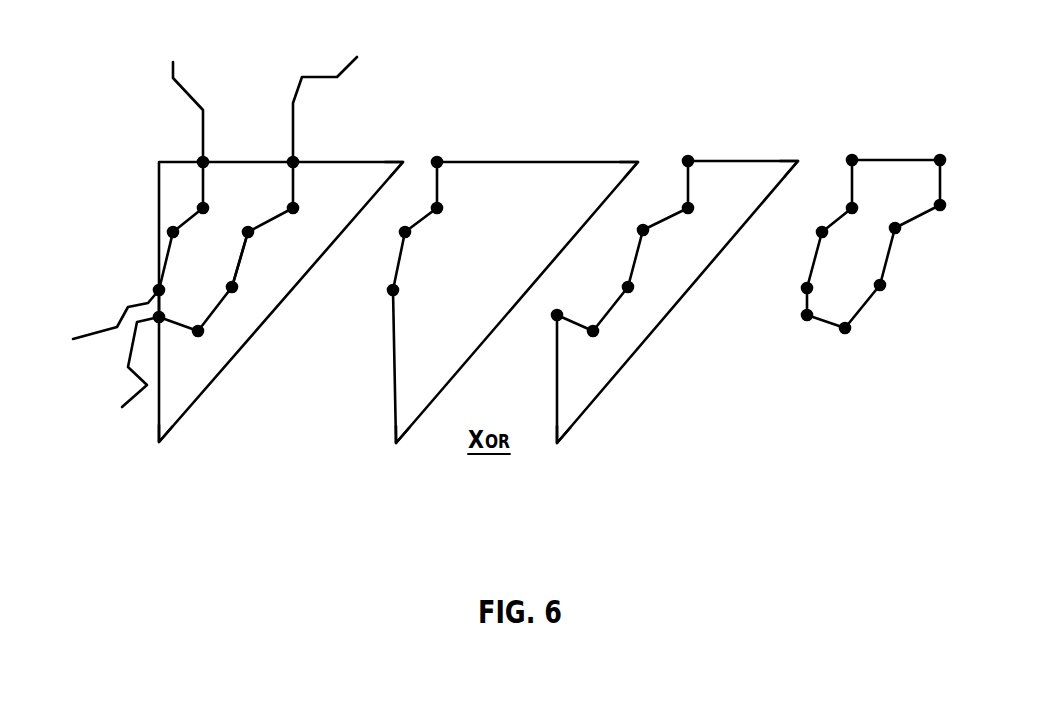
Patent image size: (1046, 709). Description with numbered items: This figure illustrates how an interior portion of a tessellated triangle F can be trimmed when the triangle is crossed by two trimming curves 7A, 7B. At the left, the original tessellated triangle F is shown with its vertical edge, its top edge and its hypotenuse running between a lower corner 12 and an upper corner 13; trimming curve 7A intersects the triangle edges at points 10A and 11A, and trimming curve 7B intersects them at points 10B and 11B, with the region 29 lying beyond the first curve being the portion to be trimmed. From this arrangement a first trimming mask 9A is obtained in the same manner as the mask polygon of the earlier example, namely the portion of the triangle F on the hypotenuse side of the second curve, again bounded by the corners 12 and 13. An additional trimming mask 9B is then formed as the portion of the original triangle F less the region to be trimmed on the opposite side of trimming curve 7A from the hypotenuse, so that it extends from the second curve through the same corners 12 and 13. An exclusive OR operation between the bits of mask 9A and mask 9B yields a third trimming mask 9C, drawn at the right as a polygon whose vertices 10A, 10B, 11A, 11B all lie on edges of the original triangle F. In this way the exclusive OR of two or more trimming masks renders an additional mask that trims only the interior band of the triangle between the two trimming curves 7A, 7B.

The trimming curve 7A is at (203, 183).
The trimming curve 7B is at (293, 183).
The trimming mask 9A is at (477, 290).
The trimming mask 9B is at (642, 330).
The trimming mask 9C is at (863, 265).
The intersection point 10A is at (159, 290).
The intersection point 10B is at (160, 320).
The intersection point 11A is at (203, 162).
The intersection point 11B is at (293, 162).
The bottom corner of cell 12 is at (159, 447).
The top corner of cell 13 is at (400, 162).
The region to be trimmed 29 is at (172, 205).
The tessellated triangle F is at (250, 273).